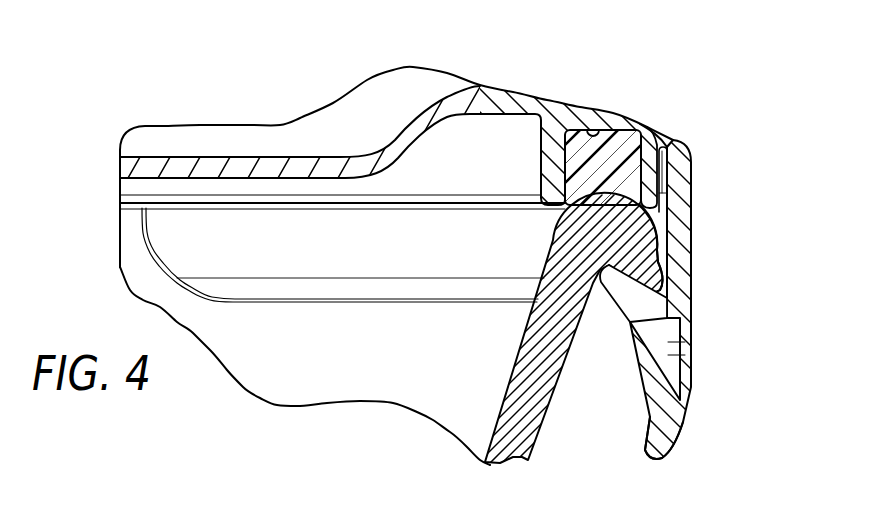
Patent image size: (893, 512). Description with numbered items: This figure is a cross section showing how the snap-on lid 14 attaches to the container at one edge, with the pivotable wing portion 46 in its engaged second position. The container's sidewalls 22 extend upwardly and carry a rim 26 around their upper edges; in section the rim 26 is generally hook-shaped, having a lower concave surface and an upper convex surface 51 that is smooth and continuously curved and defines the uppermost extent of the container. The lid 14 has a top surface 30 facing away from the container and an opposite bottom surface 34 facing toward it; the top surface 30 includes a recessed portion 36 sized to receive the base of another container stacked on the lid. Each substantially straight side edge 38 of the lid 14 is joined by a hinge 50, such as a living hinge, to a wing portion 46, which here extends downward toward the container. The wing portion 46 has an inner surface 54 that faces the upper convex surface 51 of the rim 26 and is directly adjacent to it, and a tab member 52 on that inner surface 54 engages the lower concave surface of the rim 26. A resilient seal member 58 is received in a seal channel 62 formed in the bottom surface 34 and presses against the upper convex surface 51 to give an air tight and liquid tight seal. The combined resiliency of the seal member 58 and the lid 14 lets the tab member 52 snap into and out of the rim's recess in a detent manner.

The snap-on lid 14 is at (243, 155).
The sidewalls 22 is at (510, 405).
The rim 26 is at (608, 268).
The top surface 30 is at (538, 82).
The bottom surface 34 is at (309, 180).
The recessed portion 36 is at (420, 135).
The side edges 38 is at (653, 128).
The pivotable wing portion 46 is at (691, 386).
The hinge 50 is at (673, 142).
The upper convex surface 51 is at (670, 221).
The tab member 52 is at (638, 268).
The inner surface 54 is at (643, 412).
The resilient seal member 58 is at (583, 177).
The seal channel 62 is at (581, 132).